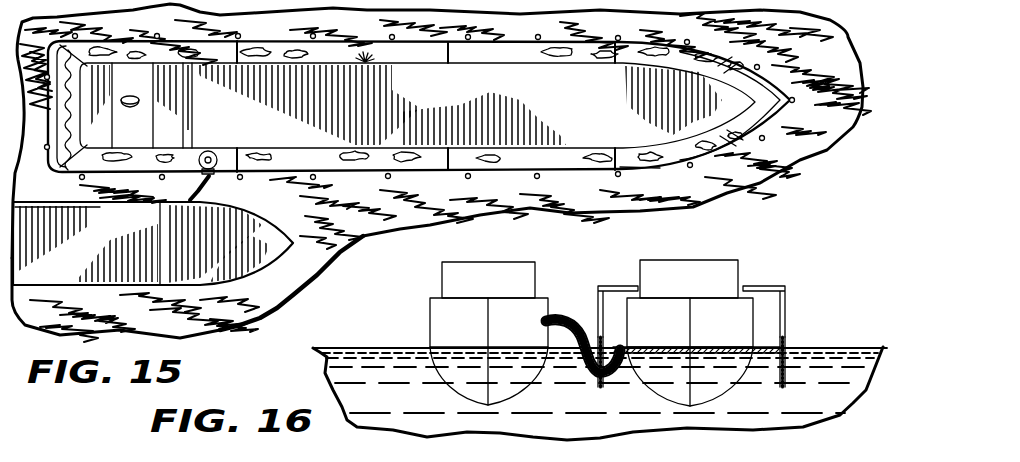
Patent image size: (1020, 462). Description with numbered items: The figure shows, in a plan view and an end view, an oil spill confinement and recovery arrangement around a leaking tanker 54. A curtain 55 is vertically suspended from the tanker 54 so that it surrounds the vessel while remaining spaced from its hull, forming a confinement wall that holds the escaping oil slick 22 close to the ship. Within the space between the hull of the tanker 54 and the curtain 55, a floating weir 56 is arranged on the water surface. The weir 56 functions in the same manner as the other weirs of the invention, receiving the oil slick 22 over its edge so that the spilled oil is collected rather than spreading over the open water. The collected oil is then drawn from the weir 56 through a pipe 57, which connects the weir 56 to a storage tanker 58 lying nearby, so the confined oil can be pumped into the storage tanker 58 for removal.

In FIG. 15, the oil slick 22 is at (840, 48).
In FIG. 16, the oil slick 22 is at (363, 332).
In FIG. 15, the leaking tanker 54 is at (770, 130).
In FIG. 16, the leaking tanker 54 is at (740, 275).
In FIG. 15, the curtain 55 is at (658, 170).
In FIG. 16, the curtain 55 is at (598, 388).
In FIG. 15, the floating weir 56 is at (218, 150).
In FIG. 16, the floating weir 56 is at (614, 350).
In FIG. 15, the pipe 57 is at (216, 186).
In FIG. 16, the pipe 57 is at (580, 291).
In FIG. 15, the storage tanker 58 is at (247, 260).
In FIG. 16, the storage tanker 58 is at (430, 306).